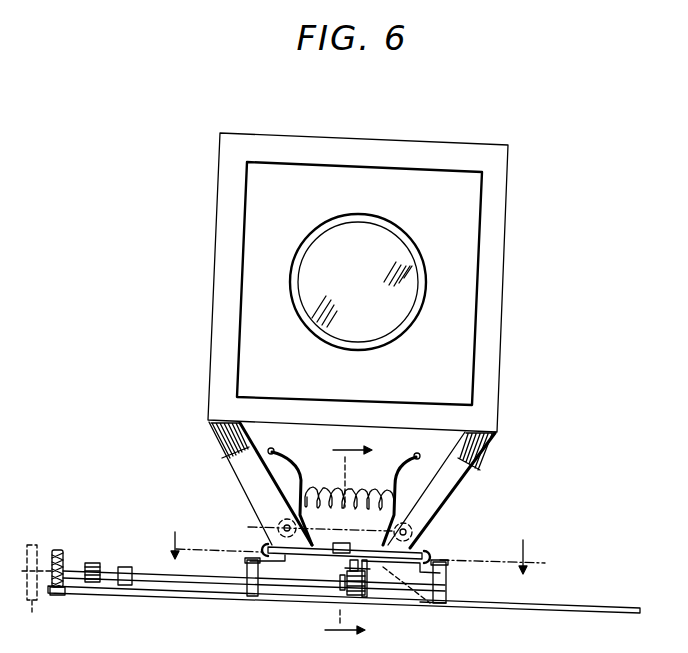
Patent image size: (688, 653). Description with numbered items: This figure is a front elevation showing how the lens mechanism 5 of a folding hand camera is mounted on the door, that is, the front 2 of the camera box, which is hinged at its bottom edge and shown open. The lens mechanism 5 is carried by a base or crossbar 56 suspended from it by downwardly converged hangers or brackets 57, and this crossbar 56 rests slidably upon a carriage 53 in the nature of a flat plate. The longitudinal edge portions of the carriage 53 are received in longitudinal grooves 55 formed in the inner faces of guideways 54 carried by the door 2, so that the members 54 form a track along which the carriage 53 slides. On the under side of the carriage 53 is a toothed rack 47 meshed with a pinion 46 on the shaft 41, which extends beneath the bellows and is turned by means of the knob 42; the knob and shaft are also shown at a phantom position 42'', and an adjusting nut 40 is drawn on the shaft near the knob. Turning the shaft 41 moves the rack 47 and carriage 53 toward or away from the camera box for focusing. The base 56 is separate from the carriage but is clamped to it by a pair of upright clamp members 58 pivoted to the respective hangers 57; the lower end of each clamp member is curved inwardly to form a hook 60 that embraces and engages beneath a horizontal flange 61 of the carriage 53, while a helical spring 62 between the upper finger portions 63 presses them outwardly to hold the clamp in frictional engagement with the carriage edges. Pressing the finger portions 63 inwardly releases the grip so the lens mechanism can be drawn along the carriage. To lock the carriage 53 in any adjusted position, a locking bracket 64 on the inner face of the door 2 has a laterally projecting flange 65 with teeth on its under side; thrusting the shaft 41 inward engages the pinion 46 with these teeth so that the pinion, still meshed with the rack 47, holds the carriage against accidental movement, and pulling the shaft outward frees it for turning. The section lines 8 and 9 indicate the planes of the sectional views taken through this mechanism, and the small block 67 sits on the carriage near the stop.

The front of the camera box 2 is at (344, 618).
The lens mechanism 5 is at (397, 277).
The section line 8- 8 is at (348, 540).
The section line 9- 9 is at (349, 549).
The adjusting nut 40 is at (88, 563).
The shaft 41 is at (110, 572).
The knob 42 is at (46, 595).
The knob phantom position 42'' is at (68, 596).
The pinion 46 is at (362, 592).
The toothed rack 47 is at (350, 568).
The carriage 53 is at (267, 553).
The guideways 54 is at (248, 585).
The longitudinal grooves 55 is at (222, 580).
The base or crossbar 56 is at (295, 554).
The hangers or brackets 57 is at (252, 457).
The clamp members 58 is at (300, 505).
The hook 60 is at (262, 547).
The horizontal flange 61 is at (262, 543).
The helical spring 62 is at (320, 483).
The finger portions 63 is at (273, 452).
The locking bracket 64 is at (433, 602).
The laterally projecting flange 65 is at (387, 570).
The block 67 is at (344, 543).